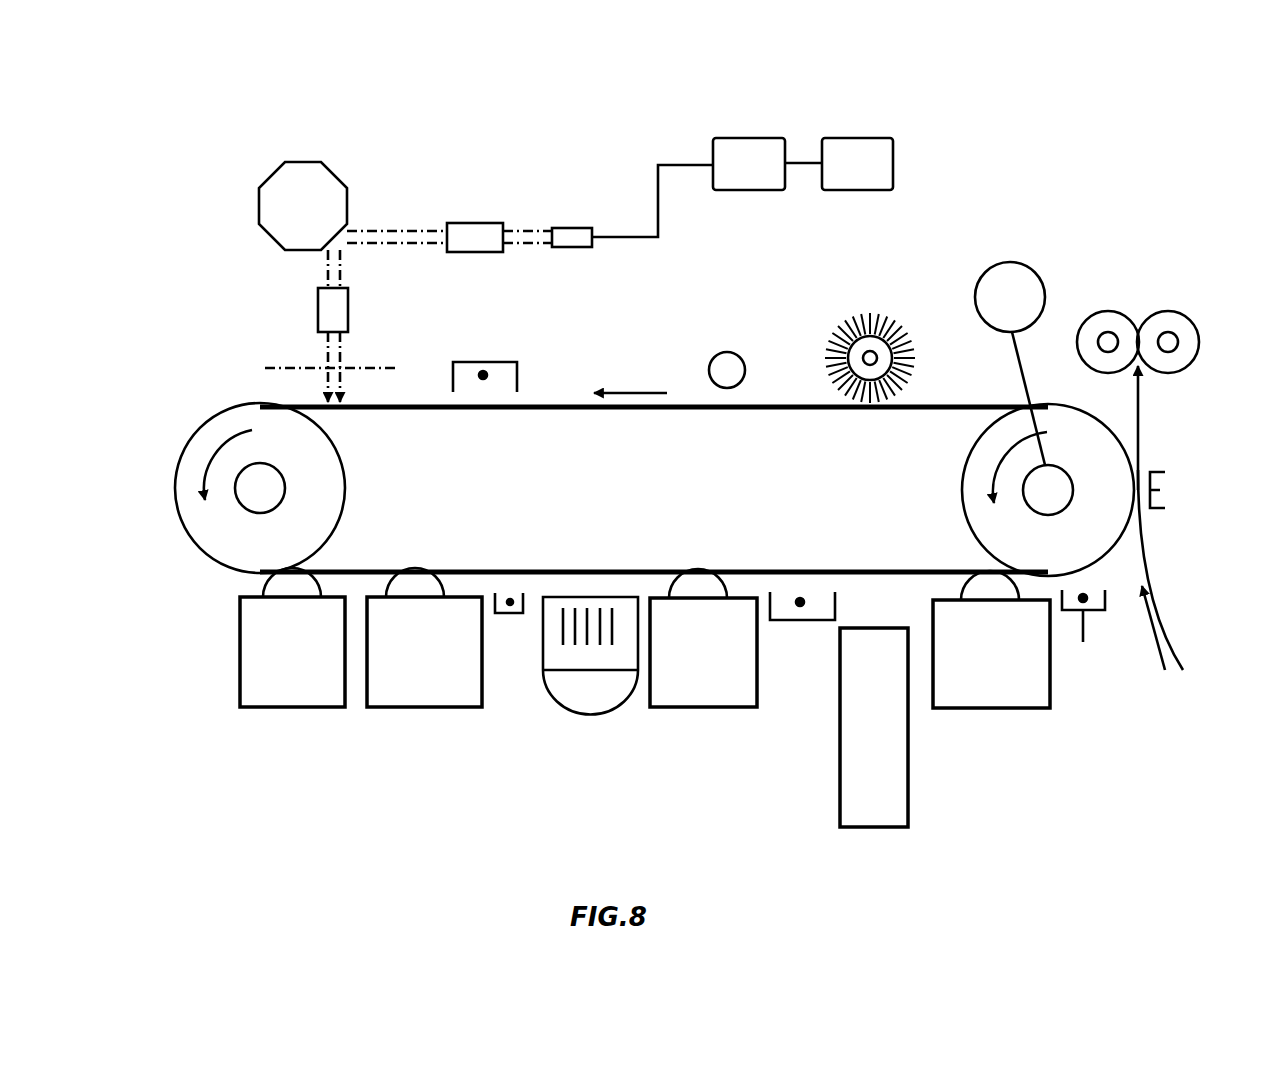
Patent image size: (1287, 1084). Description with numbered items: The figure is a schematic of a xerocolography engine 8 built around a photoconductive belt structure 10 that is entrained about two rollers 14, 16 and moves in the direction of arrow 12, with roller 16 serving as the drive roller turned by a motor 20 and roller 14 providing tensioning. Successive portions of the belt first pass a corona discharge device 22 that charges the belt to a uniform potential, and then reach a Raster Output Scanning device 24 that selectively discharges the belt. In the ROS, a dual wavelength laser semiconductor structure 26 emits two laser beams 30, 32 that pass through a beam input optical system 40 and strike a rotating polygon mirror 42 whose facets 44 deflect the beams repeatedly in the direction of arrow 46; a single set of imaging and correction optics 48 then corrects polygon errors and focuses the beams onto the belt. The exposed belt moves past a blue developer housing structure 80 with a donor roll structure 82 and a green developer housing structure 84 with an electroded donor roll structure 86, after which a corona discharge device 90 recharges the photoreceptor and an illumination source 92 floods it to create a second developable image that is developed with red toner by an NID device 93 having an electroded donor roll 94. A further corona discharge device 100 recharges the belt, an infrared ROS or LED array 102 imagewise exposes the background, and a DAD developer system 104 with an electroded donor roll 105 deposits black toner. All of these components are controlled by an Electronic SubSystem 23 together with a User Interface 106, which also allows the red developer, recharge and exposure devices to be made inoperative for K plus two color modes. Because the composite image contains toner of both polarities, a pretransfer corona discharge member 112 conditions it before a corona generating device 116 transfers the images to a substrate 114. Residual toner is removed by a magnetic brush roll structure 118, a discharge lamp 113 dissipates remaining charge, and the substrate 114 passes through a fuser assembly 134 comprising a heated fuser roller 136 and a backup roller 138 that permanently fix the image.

The xerocolography engine 8 is at (960, 220).
The photoconductive belt structure 10 is at (933, 405).
The arrow 12 is at (630, 393).
The roller 14 is at (212, 538).
The roller 16 is at (968, 470).
The motor 20 is at (1015, 262).
The corona discharge device 22 is at (515, 362).
The Electronic SubSystem 23 is at (755, 136).
The Raster Output Scanning device 24 is at (530, 188).
The laser semiconductor structure 26 is at (580, 240).
The laser beam 30 is at (532, 242).
The laser beam 32 is at (538, 228).
The beam input optical system 40 is at (478, 222).
The rotating polygon mirror 42 is at (320, 188).
The facets 44 is at (337, 235).
The arrow 46 is at (362, 283).
The imaging and correction optics 48 is at (345, 317).
The blue developer housing structure 80 is at (258, 705).
The donor roll structure 82 is at (330, 582).
The green developer housing structure 84 is at (412, 705).
The electroded donor roll structure 86 is at (430, 580).
The corona discharge device 90 is at (513, 614).
The illumination source 92 is at (583, 690).
The NID device 93 is at (730, 688).
The electroded donor roll 94 is at (685, 585).
The corona discharge device 100 is at (805, 591).
The ROS or LED array 102 is at (898, 767).
The DAD developer system 104 is at (1030, 688).
The electroded donor roll 105 is at (965, 572).
The User Interface 106 is at (856, 136).
The pretransfer corona discharge member 112 is at (1085, 634).
The discharge lamp 113 is at (738, 362).
The final substrate 114 is at (1160, 598).
The corona generating device 116 is at (1168, 493).
The magnetic brush roll structure 118 is at (896, 343).
The fuser assembly 134 is at (1263, 274).
The heated fuser roller 136 is at (1108, 313).
The backup roller 138 is at (1190, 340).